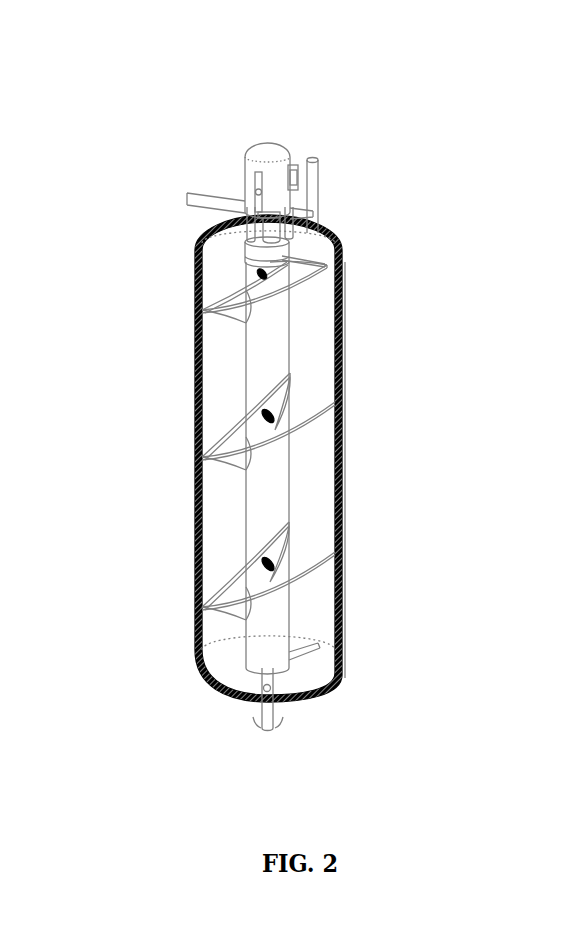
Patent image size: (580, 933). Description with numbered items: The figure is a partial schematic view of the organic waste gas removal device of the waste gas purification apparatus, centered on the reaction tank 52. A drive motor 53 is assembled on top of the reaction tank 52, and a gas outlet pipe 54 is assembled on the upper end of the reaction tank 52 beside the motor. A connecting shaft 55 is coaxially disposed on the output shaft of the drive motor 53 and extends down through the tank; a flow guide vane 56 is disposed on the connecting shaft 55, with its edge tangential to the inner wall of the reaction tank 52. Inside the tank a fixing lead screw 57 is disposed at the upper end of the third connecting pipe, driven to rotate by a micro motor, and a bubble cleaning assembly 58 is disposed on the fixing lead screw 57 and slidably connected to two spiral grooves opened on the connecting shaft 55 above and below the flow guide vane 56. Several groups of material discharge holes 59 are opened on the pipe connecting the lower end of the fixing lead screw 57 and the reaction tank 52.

The reaction tank 52 is at (315, 493).
The drive motor 53 is at (262, 150).
The gas outlet pipe 54 is at (322, 186).
The connecting shaft 55 is at (262, 357).
The flow guide vane 56 is at (302, 412).
The fixing lead screw 57 is at (262, 420).
The bubble cleaning assembly 58 is at (285, 259).
The material discharge holes 59 is at (270, 690).